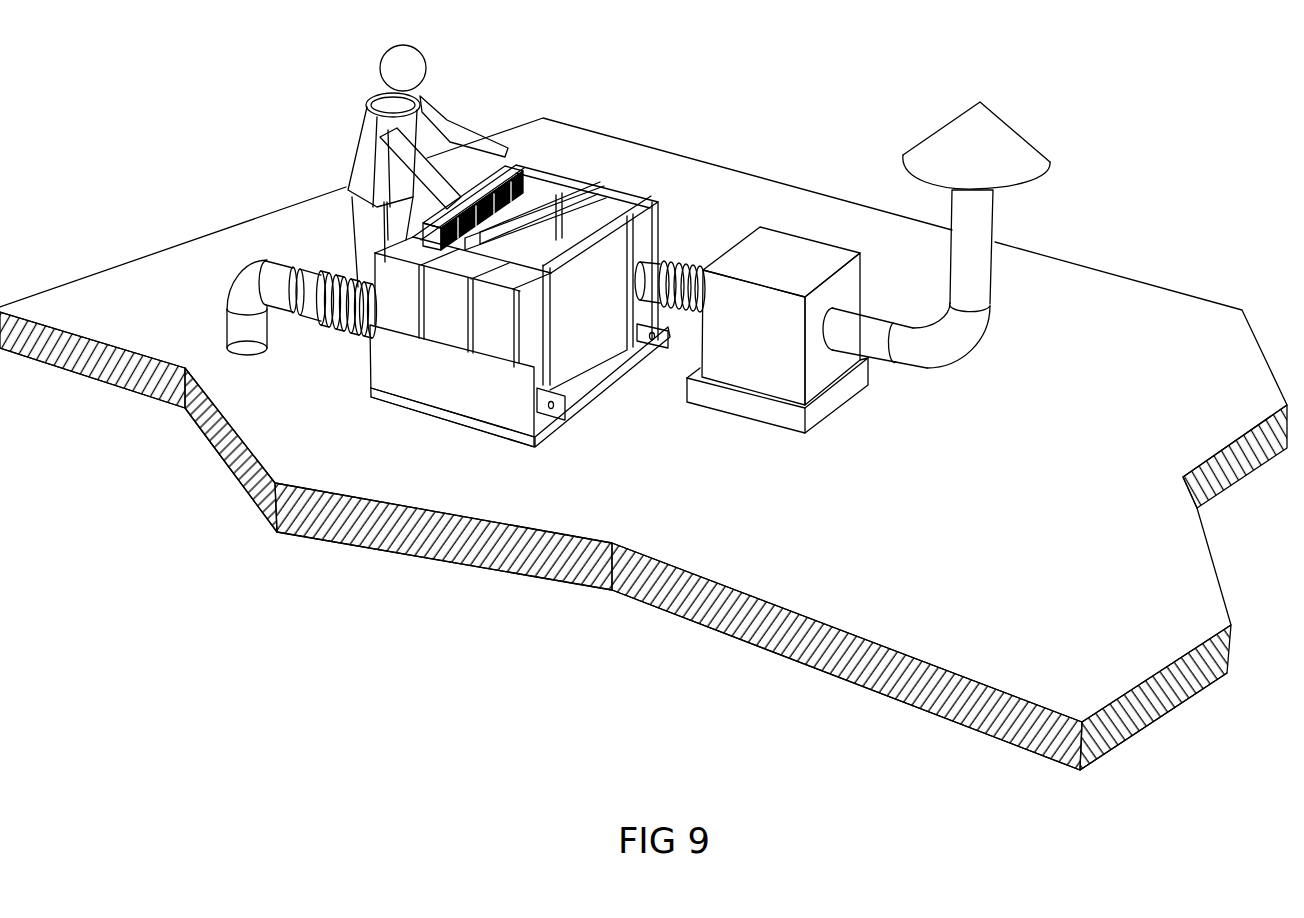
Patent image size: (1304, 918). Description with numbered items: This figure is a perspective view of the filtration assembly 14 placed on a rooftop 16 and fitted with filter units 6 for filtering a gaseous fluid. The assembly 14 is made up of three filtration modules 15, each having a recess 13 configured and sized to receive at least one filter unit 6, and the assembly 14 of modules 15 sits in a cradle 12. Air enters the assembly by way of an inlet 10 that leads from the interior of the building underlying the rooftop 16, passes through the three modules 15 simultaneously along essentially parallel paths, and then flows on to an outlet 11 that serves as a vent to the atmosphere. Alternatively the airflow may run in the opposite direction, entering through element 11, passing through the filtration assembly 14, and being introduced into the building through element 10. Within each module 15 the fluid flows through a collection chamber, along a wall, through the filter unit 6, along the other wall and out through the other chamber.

The filter unit 6 is at (513, 173).
The inlet 10 is at (252, 278).
The outlet 11 is at (983, 228).
The cradle 12 is at (465, 395).
The recess 13 is at (576, 233).
The assembly 14 is at (692, 201).
The filtration module 15 is at (405, 315).
The rooftop 16 is at (802, 212).